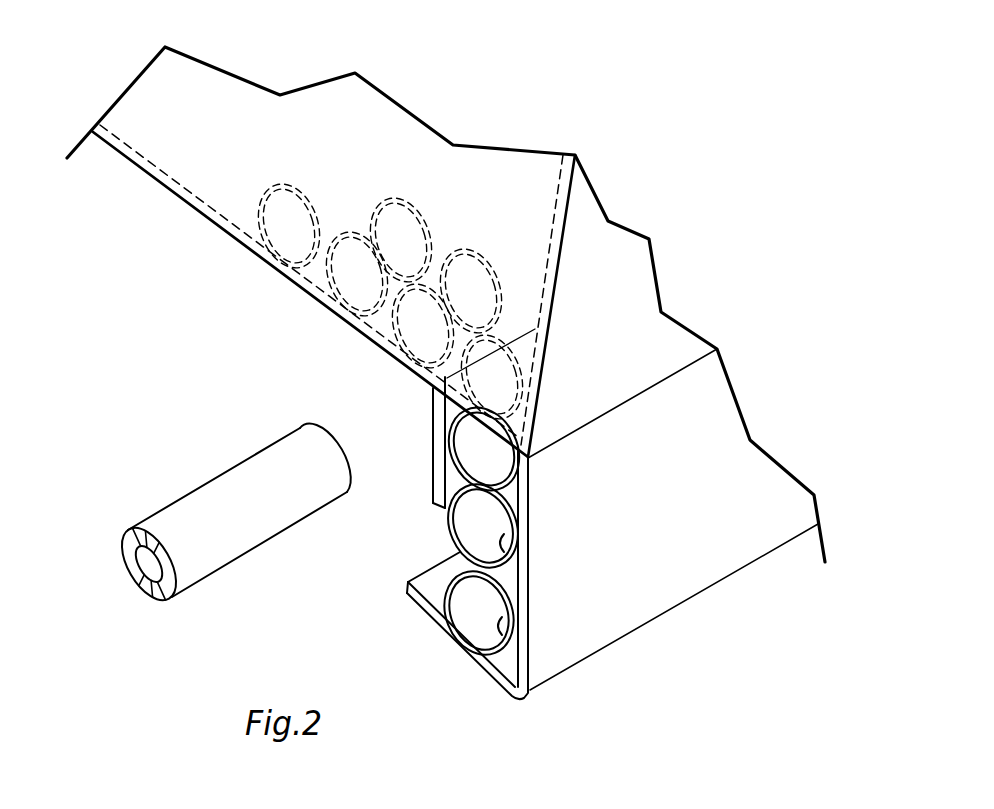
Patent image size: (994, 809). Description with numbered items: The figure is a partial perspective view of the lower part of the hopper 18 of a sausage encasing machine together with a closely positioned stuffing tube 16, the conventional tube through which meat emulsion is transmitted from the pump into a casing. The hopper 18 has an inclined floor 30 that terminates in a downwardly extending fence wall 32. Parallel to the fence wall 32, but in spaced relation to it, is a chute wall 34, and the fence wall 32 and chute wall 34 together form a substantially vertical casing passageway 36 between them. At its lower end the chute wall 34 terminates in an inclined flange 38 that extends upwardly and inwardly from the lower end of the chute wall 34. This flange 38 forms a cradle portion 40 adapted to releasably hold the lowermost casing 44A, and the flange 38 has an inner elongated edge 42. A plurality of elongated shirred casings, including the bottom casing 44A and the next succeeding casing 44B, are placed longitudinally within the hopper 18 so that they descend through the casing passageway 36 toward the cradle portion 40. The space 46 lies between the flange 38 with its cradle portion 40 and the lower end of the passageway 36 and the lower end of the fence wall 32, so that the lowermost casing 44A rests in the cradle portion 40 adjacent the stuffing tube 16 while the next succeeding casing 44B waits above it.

The stuffing tube 16 is at (210, 483).
The hopper 18 is at (296, 141).
The inclined floor 30 is at (270, 259).
The fence wall 32 is at (433, 455).
The chute wall 34 is at (663, 493).
The casing passageway 36 is at (514, 497).
The inclined flange 38 is at (448, 633).
The cradle portion 40 is at (427, 223).
The inner elongated edge 42 is at (408, 585).
The lowermost casing 44A is at (502, 614).
The next succeeding casing 44B is at (504, 534).
The space 46 is at (420, 529).